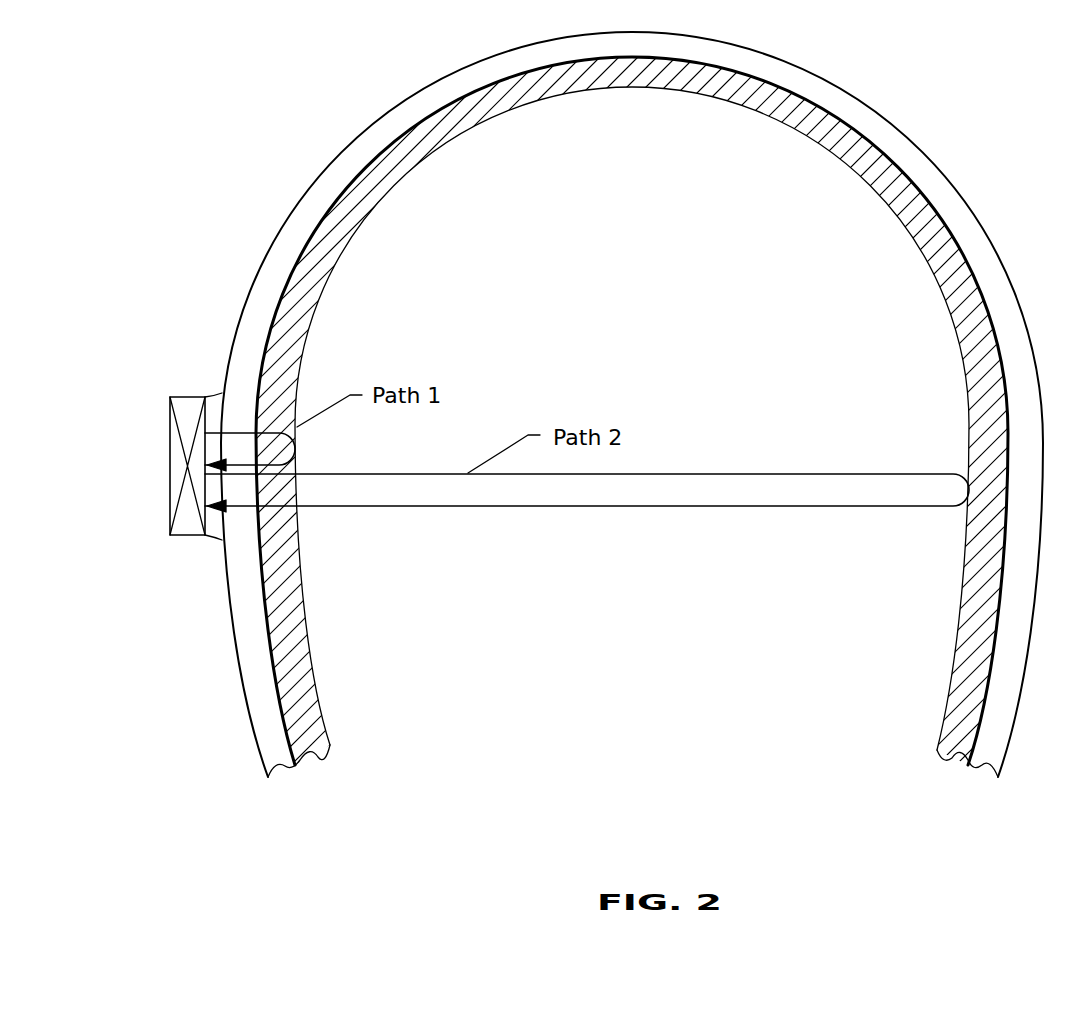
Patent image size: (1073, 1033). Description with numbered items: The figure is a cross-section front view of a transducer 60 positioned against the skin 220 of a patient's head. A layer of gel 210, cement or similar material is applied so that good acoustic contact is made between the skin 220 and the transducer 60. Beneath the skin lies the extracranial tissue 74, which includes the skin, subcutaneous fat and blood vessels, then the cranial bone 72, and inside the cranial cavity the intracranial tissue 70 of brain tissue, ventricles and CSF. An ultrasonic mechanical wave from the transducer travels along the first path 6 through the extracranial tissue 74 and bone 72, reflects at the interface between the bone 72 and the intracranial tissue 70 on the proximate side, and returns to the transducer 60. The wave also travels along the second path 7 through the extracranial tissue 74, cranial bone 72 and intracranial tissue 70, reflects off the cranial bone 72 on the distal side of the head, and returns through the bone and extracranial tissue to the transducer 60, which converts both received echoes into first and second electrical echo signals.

The skin 220 is at (250, 281).
The extracranial tissue 74 is at (320, 190).
The cranial bone 72 is at (317, 305).
The intracranial tissue 70 is at (622, 216).
The gel 210 is at (221, 392).
The transducer 60 is at (170, 430).
The Path 1 6 is at (297, 412).
The Path 2 7 is at (687, 473).